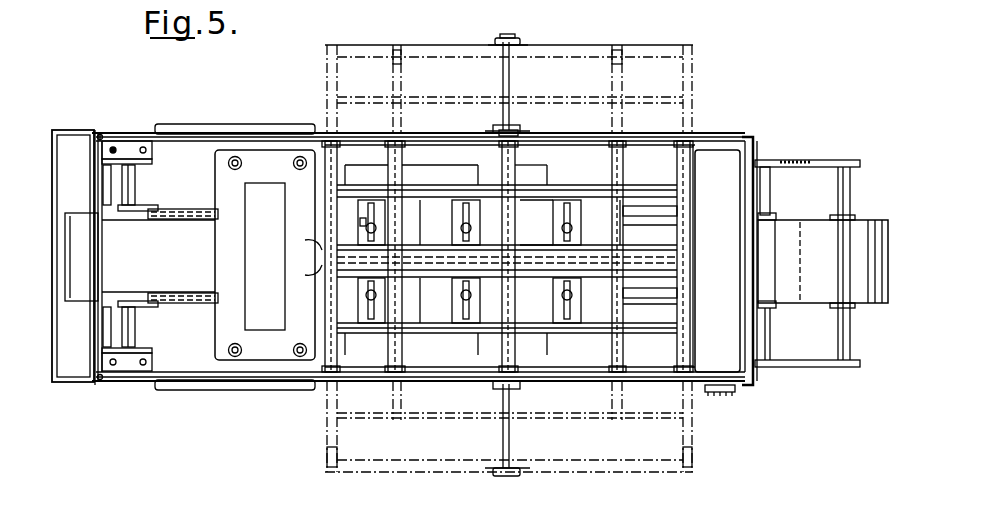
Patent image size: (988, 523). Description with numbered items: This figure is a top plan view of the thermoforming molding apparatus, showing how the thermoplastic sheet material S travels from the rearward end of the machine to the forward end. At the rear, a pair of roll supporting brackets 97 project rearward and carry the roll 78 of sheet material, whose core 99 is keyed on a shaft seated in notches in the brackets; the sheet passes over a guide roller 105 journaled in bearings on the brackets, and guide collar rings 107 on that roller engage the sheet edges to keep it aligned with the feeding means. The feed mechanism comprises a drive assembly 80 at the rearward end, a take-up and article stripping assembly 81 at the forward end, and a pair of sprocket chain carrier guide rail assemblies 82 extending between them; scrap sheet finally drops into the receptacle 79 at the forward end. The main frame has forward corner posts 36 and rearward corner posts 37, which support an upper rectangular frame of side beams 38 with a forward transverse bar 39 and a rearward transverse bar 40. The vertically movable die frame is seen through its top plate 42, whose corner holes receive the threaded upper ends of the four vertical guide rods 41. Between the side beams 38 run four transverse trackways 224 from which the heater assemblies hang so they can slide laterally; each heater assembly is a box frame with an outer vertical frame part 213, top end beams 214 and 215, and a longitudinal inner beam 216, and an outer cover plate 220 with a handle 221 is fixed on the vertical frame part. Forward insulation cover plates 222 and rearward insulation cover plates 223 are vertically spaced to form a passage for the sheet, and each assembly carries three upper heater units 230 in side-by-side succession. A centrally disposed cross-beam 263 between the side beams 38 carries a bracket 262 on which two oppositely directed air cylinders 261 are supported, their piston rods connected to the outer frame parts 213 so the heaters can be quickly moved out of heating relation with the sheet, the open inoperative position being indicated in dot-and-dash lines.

The thermoplastic sheet material S is at (78, 267).
The upright corner posts 36 is at (102, 133).
The upright corner posts 37 is at (748, 137).
The side beams 38 is at (283, 133).
The forward transverse bar 39 is at (102, 318).
The rearward transverse bar 40 is at (770, 342).
The vertical guide rods 41 is at (292, 163).
The top plate 42 is at (225, 262).
The roll 78 is at (868, 296).
The receptacle 79 is at (52, 198).
The drive assembly 80 is at (721, 148).
The take-up and article stripping assembly 81 is at (148, 190).
The sprocket chain carrier guide rail assemblies 82 is at (642, 206).
The roll supporting brackets 97 is at (806, 158).
The core 99 is at (850, 195).
The guide roller 105 is at (767, 200).
The guide collar rings 107 is at (770, 216).
The outer vertical frame part 213 is at (458, 141).
The end beam 214 is at (694, 198).
The end beam 215 is at (325, 196).
The longitudinal inner beam 216 is at (437, 250).
The outer cover plate 220 is at (550, 141).
The handle 221 is at (512, 128).
The forward insulation cover plates 222 is at (301, 258).
The rearward insulation cover plates 223 is at (690, 285).
The transverse trackways 224 is at (388, 355).
The upper heater units 230 is at (418, 183).
The air cylinders 261 is at (515, 218).
The bracket 262 is at (521, 257).
The cross-beam 263 is at (515, 170).